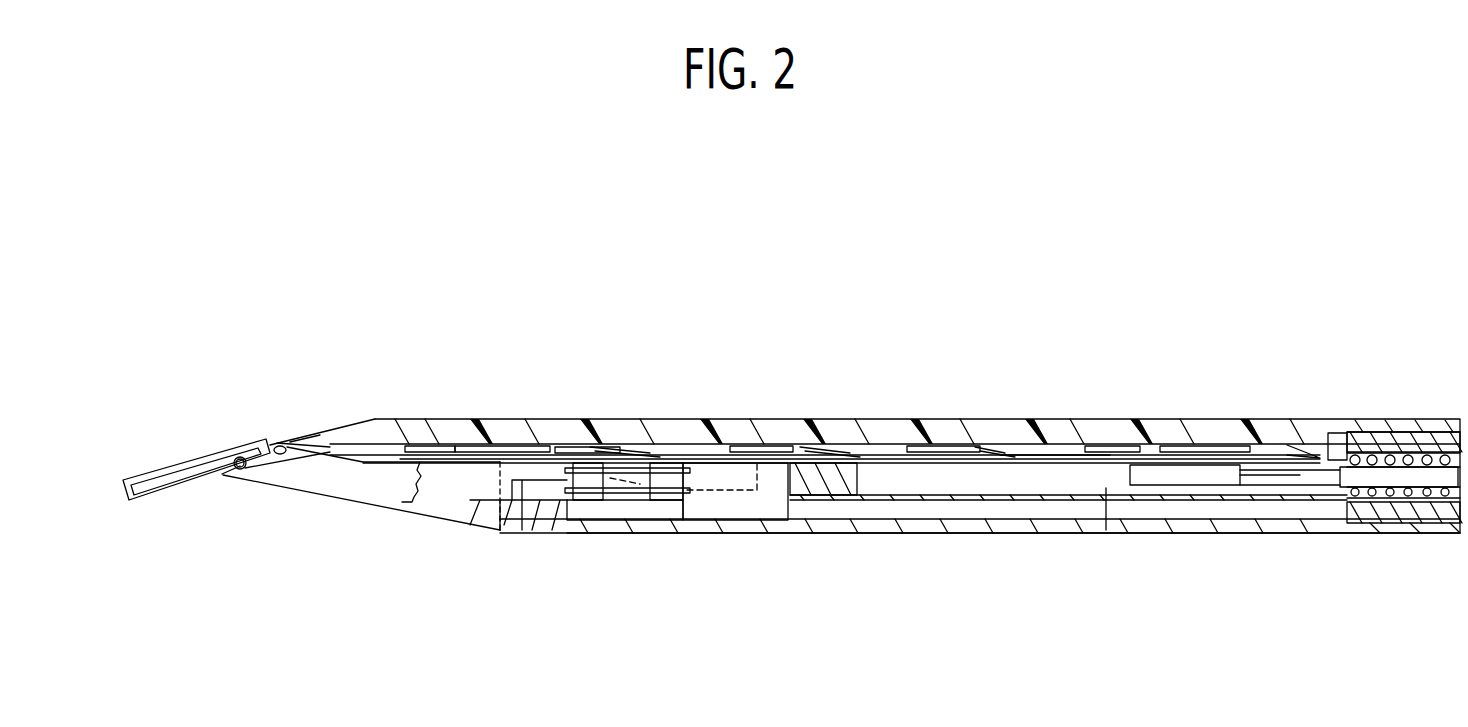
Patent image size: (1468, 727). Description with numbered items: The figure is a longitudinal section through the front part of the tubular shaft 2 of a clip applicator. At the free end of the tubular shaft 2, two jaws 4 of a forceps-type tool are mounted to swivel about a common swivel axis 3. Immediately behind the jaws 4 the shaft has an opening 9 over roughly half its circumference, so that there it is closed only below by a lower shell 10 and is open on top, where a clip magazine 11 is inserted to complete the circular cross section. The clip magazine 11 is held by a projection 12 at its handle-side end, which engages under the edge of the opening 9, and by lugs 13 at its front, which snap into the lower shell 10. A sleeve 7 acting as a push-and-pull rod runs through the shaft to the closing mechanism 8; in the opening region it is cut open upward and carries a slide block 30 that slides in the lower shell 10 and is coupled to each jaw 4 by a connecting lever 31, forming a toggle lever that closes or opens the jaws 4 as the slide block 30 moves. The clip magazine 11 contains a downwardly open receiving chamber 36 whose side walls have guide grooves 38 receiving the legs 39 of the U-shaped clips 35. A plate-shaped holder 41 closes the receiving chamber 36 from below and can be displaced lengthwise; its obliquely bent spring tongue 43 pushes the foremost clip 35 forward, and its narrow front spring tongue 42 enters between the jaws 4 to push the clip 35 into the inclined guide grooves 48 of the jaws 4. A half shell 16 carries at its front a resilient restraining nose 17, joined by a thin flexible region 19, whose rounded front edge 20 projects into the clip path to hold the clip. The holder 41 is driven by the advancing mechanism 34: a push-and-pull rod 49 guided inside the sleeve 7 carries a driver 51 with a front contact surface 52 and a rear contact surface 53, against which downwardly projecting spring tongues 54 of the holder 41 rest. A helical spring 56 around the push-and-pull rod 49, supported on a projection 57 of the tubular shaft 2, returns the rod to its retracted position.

The tubular shaft 2 is at (1418, 420).
The swivel axis 3 is at (510, 522).
The jaws 4 is at (367, 490).
The sleeve 7 is at (1045, 497).
The closing mechanism 8 is at (790, 537).
The opening 9 is at (365, 452).
The lower shell 10 is at (915, 535).
The clip magazine 11 is at (853, 448).
The projection 12 is at (1320, 440).
The lugs 13 is at (723, 480).
The half shell 16 is at (777, 428).
The restraining nose 17 is at (305, 428).
The flexible region 19 is at (243, 459).
The front edge 20 is at (237, 470).
The slide block 30 is at (752, 505).
The connecting lever 31 is at (630, 495).
The advancing mechanism 34 is at (1275, 537).
The clips 35 is at (567, 450).
The receiving chamber 36 is at (452, 444).
The guide grooves 38 is at (507, 448).
The legs 39 is at (603, 445).
The holder 41 is at (1053, 451).
The spring tongue 42 is at (965, 444).
The spring tongue 43 is at (983, 449).
The guide grooves 48 is at (175, 472).
The push-and-pull rod 49 is at (1345, 490).
The driver 51 is at (1207, 470).
The front contact surface 52 is at (1130, 472).
The rear contact surface 53 is at (1243, 485).
The spring tongues 54 is at (1113, 462).
The helical spring 56 is at (1422, 482).
The projection 57 is at (1342, 445).